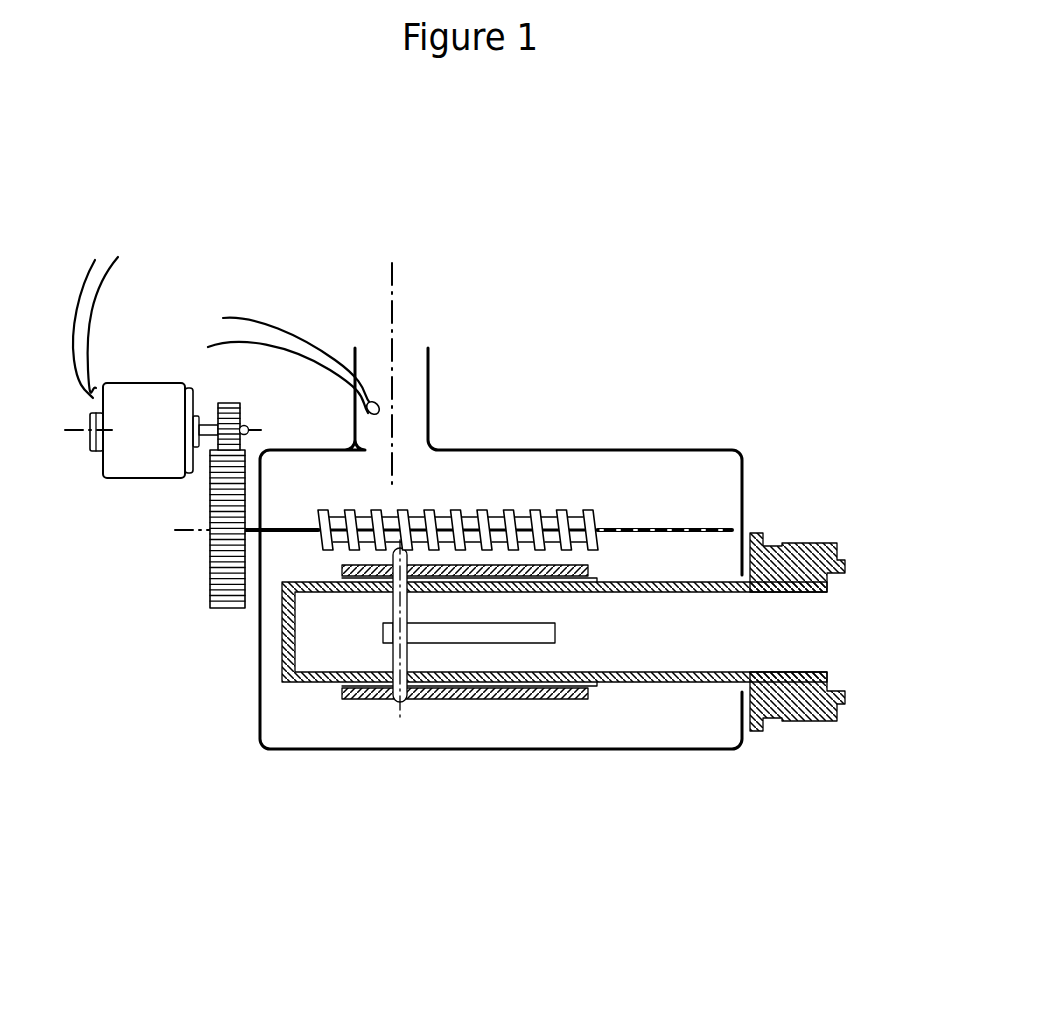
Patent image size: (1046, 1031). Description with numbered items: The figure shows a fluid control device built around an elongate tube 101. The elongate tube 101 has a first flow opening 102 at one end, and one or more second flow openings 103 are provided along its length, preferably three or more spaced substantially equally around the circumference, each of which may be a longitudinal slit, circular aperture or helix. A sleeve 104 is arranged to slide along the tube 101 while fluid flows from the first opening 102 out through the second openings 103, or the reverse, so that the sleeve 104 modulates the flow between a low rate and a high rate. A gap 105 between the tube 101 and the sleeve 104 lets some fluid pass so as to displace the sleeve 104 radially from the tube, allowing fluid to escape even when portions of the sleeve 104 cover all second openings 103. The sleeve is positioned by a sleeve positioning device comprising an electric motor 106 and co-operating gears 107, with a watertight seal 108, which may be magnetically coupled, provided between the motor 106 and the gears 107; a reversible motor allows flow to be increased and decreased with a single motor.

The elongate tube 101 is at (685, 652).
The first flow opening 102 is at (821, 624).
The second flow opening 103 is at (467, 637).
The sleeve 104 is at (450, 700).
The gap 105 is at (593, 577).
The electric motor 106 is at (150, 403).
The co-operating gears 107 is at (207, 573).
The watertight seal 108 is at (238, 600).